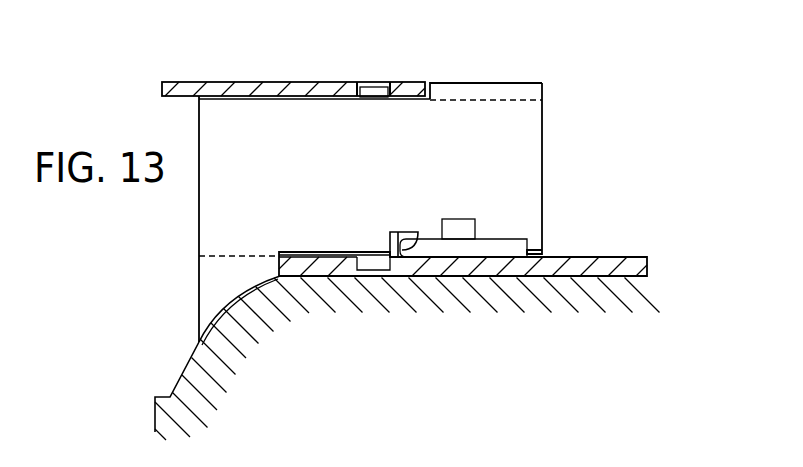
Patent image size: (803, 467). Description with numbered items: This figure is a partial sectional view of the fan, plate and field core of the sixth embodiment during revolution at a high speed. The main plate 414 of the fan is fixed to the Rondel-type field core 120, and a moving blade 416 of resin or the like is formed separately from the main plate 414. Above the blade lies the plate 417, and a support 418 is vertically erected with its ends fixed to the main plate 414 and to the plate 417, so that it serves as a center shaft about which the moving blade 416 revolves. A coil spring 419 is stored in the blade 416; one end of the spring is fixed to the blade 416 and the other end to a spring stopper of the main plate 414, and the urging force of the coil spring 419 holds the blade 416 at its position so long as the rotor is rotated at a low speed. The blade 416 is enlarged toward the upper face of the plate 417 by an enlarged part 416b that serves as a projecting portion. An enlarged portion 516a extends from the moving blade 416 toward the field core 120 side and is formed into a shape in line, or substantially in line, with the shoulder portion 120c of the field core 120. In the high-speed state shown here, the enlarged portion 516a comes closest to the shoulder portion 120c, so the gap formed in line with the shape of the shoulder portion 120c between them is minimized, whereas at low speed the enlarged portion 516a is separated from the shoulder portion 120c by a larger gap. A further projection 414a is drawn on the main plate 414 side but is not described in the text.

The plate 417 is at (322, 82).
The enlarged part 416b is at (520, 87).
The moving blade 416 is at (530, 131).
The projection on substrate 414a is at (467, 230).
The coil spring 419 is at (527, 244).
The main plate 414 is at (640, 265).
The support 418 is at (379, 263).
The enlarged portion 516a is at (207, 267).
The shoulder portion 120c is at (212, 355).
The field core 120 is at (615, 303).